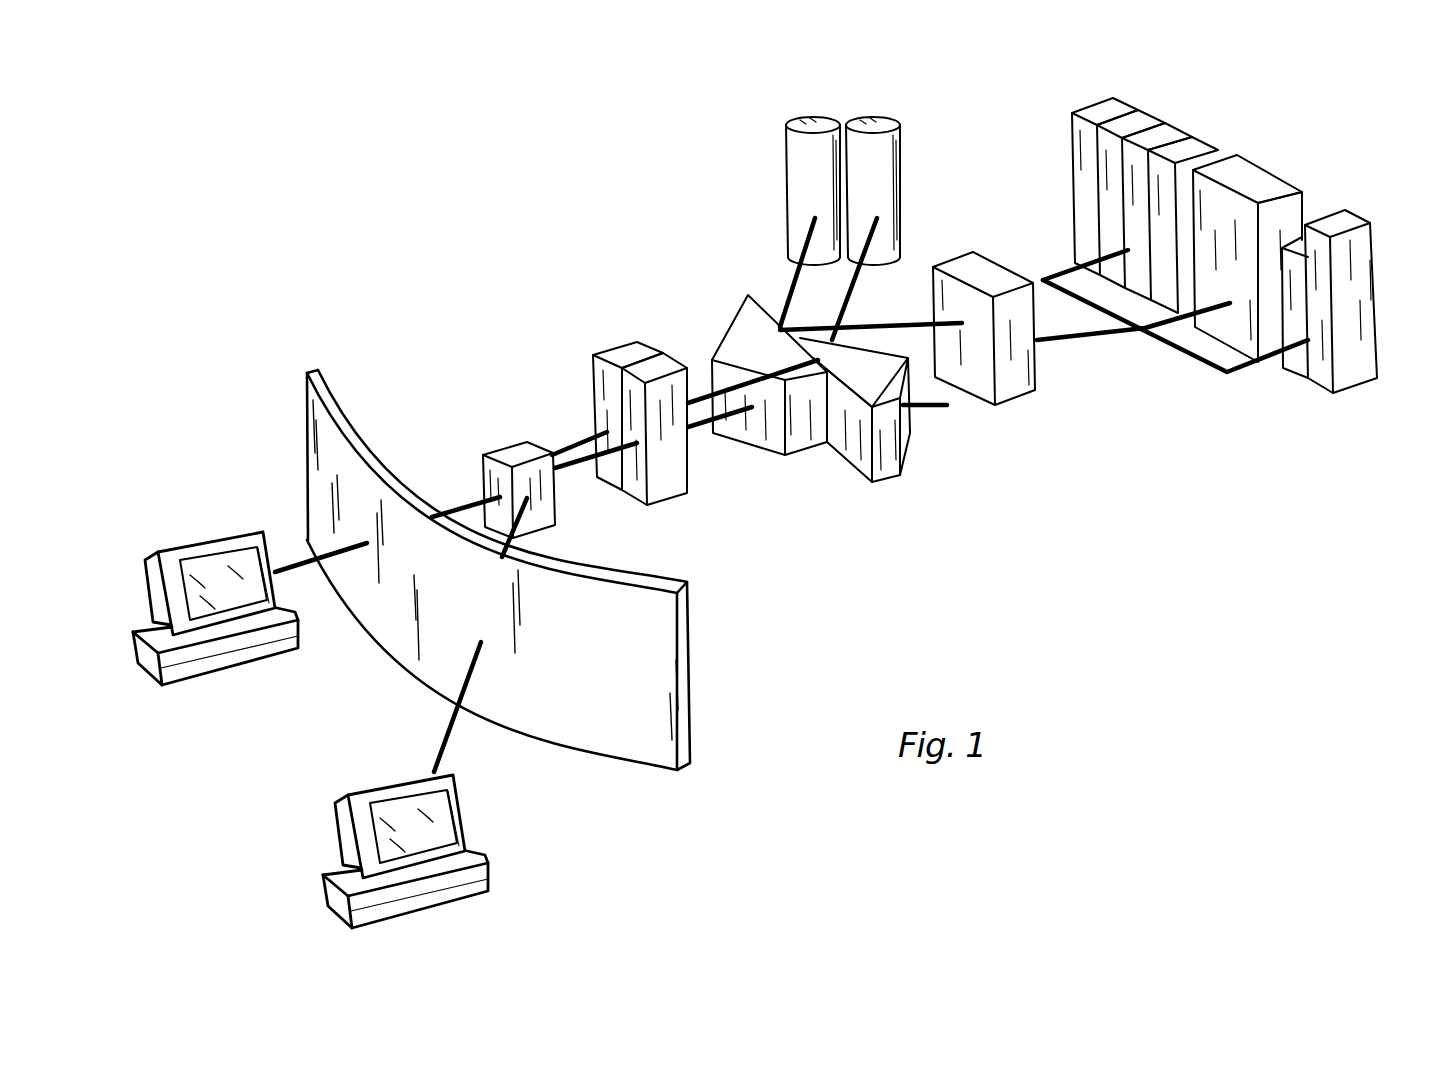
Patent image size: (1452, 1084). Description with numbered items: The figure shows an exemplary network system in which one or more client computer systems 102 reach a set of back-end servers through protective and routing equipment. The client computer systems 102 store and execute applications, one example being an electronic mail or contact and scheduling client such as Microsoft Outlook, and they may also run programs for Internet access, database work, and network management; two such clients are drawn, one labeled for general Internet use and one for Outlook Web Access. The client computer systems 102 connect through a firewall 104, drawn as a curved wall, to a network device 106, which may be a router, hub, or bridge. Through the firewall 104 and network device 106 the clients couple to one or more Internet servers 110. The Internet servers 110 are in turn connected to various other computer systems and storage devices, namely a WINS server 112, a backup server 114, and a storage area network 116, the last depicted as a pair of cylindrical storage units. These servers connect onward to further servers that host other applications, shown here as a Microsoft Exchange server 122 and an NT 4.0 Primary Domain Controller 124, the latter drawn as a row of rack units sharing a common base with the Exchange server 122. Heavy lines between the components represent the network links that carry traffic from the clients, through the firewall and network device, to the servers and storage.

The client computer systems 102 is at (235, 667).
The firewall 104 is at (310, 366).
The network device 106 is at (498, 440).
The Internet servers 110 is at (612, 353).
The WINS server 112 is at (883, 478).
The backup server 114 is at (1017, 402).
The storage area network (SAN) 116 is at (873, 101).
The Microsoft Exchange server 122 is at (1348, 390).
The NT 4.0 PDC (Primary Domain Controller) 124 is at (1203, 142).